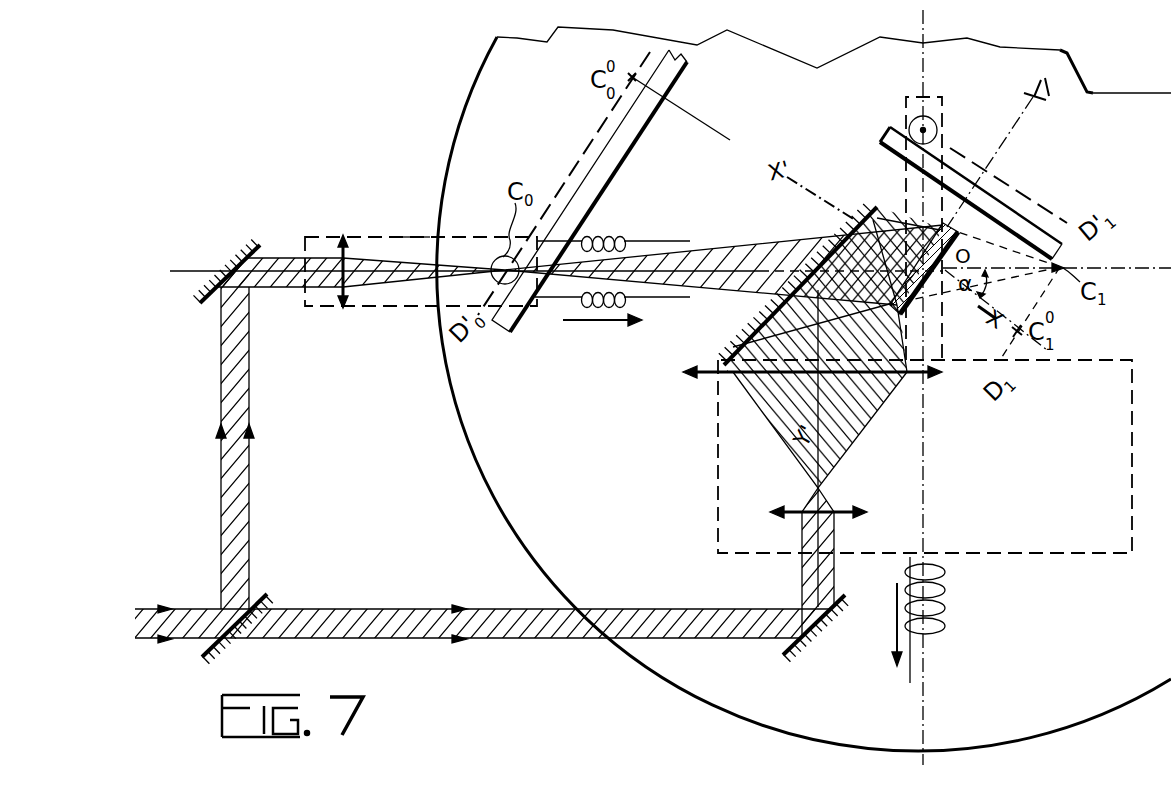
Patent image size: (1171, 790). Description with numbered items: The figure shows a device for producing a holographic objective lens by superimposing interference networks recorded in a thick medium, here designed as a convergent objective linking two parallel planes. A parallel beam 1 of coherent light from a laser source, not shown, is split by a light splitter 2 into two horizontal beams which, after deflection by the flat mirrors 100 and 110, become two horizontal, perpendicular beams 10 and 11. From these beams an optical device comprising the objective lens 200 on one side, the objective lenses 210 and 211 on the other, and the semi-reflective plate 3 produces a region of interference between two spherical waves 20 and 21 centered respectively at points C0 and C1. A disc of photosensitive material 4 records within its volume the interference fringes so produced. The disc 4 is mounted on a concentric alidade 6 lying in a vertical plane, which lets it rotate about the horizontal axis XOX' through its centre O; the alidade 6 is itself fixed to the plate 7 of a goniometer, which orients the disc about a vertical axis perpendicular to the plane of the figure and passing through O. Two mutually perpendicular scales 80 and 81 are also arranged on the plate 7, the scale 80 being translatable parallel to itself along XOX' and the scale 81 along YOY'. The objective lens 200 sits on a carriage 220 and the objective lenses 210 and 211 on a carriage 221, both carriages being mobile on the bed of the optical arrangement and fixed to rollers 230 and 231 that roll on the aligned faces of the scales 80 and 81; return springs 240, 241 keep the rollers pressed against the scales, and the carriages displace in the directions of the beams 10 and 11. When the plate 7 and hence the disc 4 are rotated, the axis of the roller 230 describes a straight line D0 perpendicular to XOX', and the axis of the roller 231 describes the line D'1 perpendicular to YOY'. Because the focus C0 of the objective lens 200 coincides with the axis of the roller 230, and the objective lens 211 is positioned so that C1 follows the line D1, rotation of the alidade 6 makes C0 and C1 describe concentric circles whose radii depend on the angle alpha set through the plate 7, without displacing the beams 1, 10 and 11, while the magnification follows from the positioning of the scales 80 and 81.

The parallel beam 1 is at (201, 613).
The light splitter 2 is at (262, 600).
The semi-reflective plate 3 is at (750, 333).
The disc of photosensitive material 4 is at (927, 292).
The alidade 6 is at (950, 228).
The plate 7 is at (500, 488).
The horizontal beam 10 is at (303, 295).
The horizontal beam 11 is at (807, 530).
The spherical wave 20 is at (770, 253).
The spherical wave 21 is at (875, 400).
The scale 80 is at (587, 196).
The scale 81 is at (980, 200).
The flat mirror 100 is at (240, 247).
The flat mirror 110 is at (793, 657).
The objective lens 200 is at (330, 237).
The objective lens 210 is at (800, 507).
The objective lens 211 is at (730, 373).
The carriage 220 is at (413, 248).
The carriage 221 is at (720, 428).
The roller 230 is at (501, 256).
The roller 231 is at (937, 122).
The return spring 240 is at (612, 293).
The return spring 241 is at (943, 610).